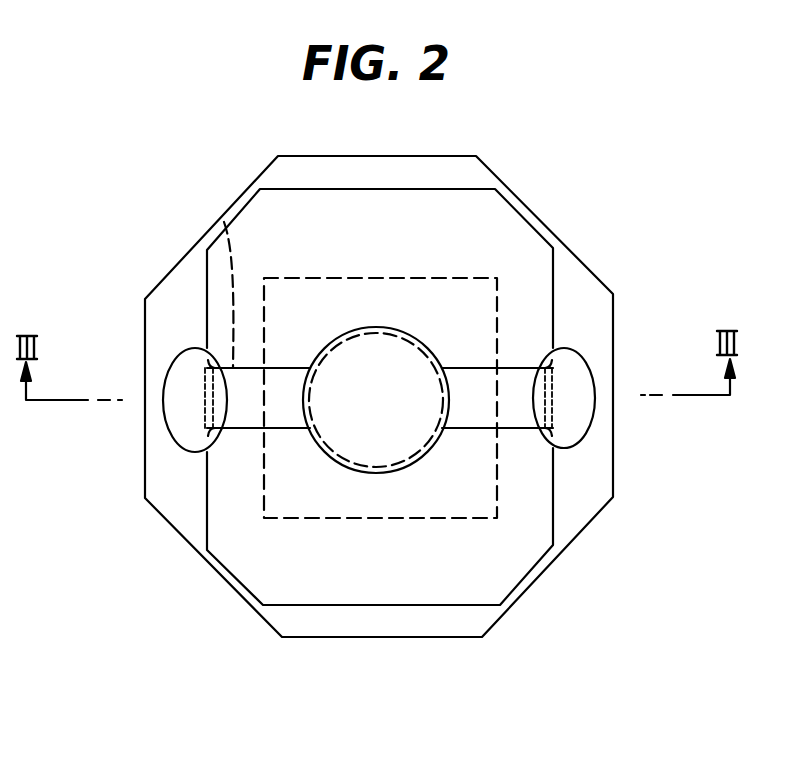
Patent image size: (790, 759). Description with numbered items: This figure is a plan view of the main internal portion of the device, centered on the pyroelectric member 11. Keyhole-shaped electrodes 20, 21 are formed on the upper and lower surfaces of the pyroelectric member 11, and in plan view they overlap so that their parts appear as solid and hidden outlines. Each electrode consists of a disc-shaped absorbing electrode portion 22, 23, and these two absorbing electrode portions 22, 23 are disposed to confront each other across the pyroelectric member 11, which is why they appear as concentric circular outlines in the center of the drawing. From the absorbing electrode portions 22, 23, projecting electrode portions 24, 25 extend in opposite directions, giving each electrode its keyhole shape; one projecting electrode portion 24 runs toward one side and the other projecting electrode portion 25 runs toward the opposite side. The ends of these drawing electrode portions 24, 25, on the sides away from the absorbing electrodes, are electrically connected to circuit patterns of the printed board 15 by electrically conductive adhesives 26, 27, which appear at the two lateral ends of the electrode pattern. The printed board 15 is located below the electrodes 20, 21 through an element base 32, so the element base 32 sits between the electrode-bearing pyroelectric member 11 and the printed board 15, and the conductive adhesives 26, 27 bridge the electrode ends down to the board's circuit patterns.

The pyroelectric member 11 is at (522, 303).
The printed board 15 is at (185, 498).
The keyhole-shaped electrode 20 is at (465, 403).
The keyhole-shaped electrode 21 is at (298, 430).
The absorbing electrode portion 22 is at (390, 403).
The absorbing electrode portion 23 is at (363, 445).
The projecting electrode portion 24 is at (507, 403).
The projecting electrode portion 25 is at (225, 225).
The electrically conductive adhesive 26 is at (573, 401).
The electrically conductive adhesive 27 is at (192, 420).
The element base 32 is at (410, 220).